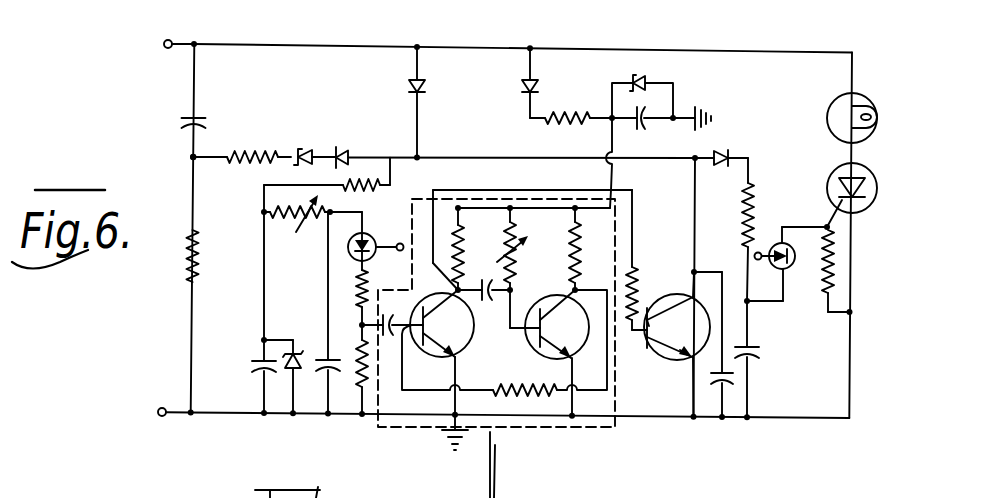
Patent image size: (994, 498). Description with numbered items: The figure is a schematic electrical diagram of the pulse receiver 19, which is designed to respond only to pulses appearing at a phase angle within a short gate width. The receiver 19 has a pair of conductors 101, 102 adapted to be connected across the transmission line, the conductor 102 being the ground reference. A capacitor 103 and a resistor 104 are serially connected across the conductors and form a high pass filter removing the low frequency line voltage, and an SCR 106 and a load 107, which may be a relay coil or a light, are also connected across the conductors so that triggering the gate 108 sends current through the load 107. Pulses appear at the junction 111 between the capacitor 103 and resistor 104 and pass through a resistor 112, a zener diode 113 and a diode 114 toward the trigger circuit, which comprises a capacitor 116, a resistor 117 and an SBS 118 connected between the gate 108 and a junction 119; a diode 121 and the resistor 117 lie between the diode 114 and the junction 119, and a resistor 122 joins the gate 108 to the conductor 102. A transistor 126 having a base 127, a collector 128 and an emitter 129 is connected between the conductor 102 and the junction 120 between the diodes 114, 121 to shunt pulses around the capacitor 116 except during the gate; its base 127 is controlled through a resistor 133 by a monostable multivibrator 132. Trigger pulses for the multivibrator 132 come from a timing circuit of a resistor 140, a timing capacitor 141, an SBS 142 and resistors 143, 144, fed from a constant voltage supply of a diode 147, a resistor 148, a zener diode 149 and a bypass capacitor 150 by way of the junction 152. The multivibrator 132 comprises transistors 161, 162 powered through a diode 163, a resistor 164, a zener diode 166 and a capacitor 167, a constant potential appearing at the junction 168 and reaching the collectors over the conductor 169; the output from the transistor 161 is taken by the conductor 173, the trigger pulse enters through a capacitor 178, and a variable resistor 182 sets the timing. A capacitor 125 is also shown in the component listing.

The receiver 19 is at (116, 115).
The conductor 101 is at (183, 44).
The conductor 102 is at (173, 406).
The capacitor 103 is at (190, 113).
The resistor 104 is at (185, 260).
The SCR 106 is at (834, 170).
The load 107 is at (829, 102).
The gate 108 is at (826, 225).
The junction 111 is at (191, 158).
The resistor 112 is at (245, 150).
The zener diode 113 is at (305, 145).
The diode 114 is at (341, 143).
The capacitor 116 is at (754, 359).
The resistor 117 is at (745, 206).
The SBS 118 is at (792, 266).
The junction 119 is at (749, 304).
The junction 120 is at (693, 157).
The diode 121 is at (717, 154).
The resistor 122 is at (822, 274).
The capacitor 125 is at (728, 390).
The transistor 126 is at (647, 360).
The base 127 is at (643, 322).
The collector 128 is at (678, 316).
The emitter 129 is at (684, 355).
The monostable multivibrator circuit 132 is at (578, 427).
The resistor 133 is at (631, 265).
The resistor 140 is at (296, 234).
The capacitor 141 is at (322, 357).
The SBS 142 is at (353, 259).
The resistor 143 is at (384, 247).
The resistor 144 is at (355, 388).
The diode 147 is at (422, 89).
The resistor 148 is at (384, 180).
The zener diode 149 is at (288, 372).
The capacitor 150 is at (253, 373).
The junction 152 is at (262, 213).
The transistor 161 is at (468, 353).
The transistor 162 is at (549, 293).
The diode 163 is at (545, 65).
The resistor 164 is at (548, 127).
The zener diode 166 is at (644, 76).
The capacitor 167 is at (648, 112).
The junction 168 is at (610, 121).
The conductor 169 is at (550, 193).
The conductor 173 is at (480, 190).
The capacitor 178 is at (504, 343).
The resistor 182 is at (516, 266).